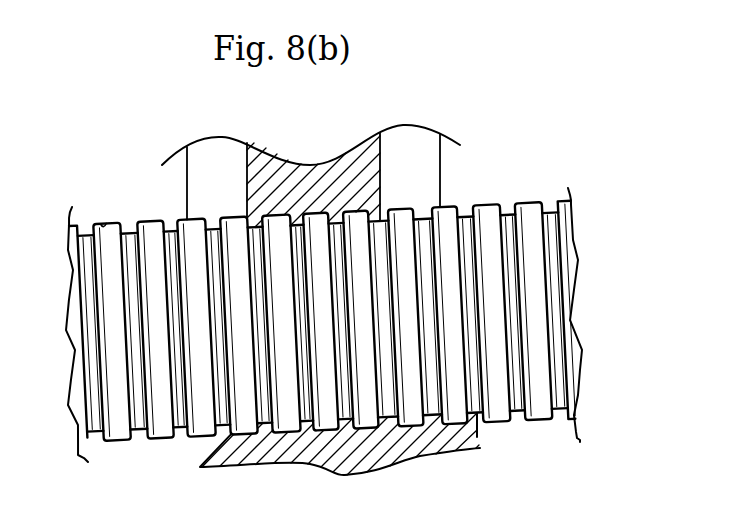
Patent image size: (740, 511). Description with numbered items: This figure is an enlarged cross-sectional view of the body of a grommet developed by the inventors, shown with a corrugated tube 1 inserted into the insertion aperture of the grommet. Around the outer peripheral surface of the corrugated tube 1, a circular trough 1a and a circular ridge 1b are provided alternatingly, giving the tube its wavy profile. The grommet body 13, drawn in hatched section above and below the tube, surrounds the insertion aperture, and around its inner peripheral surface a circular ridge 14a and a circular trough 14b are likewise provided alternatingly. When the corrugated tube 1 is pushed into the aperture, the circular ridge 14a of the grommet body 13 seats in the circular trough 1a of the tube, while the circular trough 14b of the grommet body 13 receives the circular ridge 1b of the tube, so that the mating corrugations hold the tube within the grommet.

The corrugated tube 1 is at (535, 199).
The circular trough 1a is at (508, 214).
The circular ridge 1b is at (478, 204).
The grommet body 13 is at (333, 160).
The circular ridge 14a is at (128, 232).
The circular trough 14b is at (104, 223).